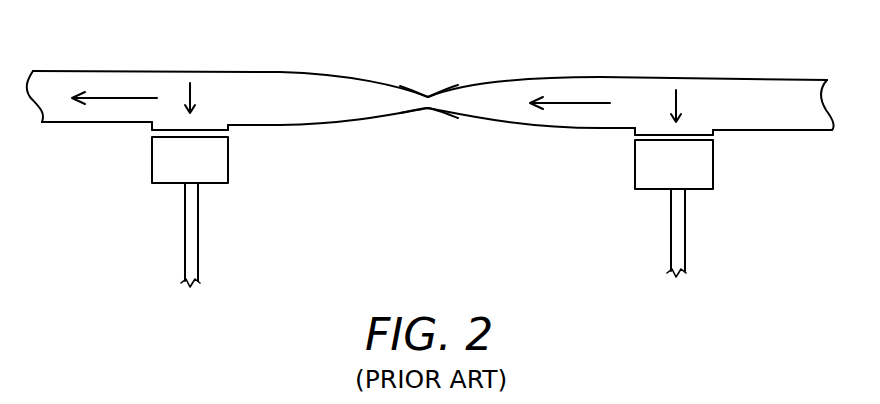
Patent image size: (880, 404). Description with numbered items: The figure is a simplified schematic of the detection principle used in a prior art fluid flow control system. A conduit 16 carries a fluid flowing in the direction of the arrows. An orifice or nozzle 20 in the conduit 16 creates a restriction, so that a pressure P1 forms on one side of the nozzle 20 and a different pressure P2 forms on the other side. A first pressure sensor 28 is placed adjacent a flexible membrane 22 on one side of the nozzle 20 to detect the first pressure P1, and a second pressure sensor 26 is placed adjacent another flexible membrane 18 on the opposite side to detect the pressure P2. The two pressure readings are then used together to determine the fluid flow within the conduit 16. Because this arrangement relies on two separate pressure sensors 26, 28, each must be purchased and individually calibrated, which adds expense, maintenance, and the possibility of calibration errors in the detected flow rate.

The conduit 16 is at (110, 71).
The orifice or nozzle 20 is at (429, 94).
The flexible membrane 18 is at (228, 130).
The flexible membrane 22 is at (637, 134).
The second pressure sensor 26 is at (228, 168).
The first pressure sensor 28 is at (713, 170).